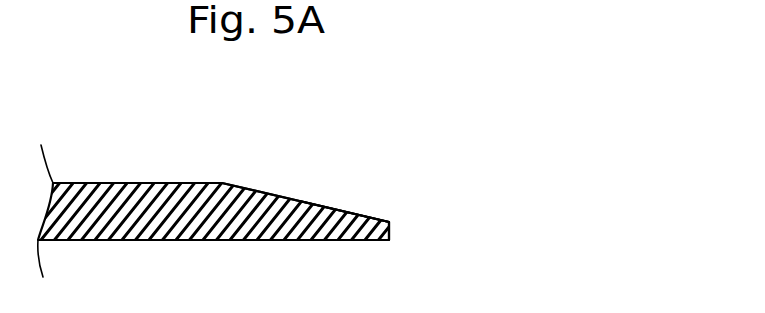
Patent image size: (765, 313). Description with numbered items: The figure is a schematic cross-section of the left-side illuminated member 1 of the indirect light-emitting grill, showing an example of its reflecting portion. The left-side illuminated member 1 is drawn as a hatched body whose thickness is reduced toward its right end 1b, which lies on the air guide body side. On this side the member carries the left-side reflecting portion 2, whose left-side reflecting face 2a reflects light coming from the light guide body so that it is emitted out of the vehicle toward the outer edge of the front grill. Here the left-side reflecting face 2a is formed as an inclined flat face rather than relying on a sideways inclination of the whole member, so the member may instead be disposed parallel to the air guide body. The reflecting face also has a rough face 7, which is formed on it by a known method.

The left-side illuminated member 1 is at (462, 50).
The left-side reflecting portion 2 is at (225, 160).
The left-side reflecting face 2a is at (300, 200).
The rough face 7 is at (355, 212).
The right end 1b is at (390, 222).